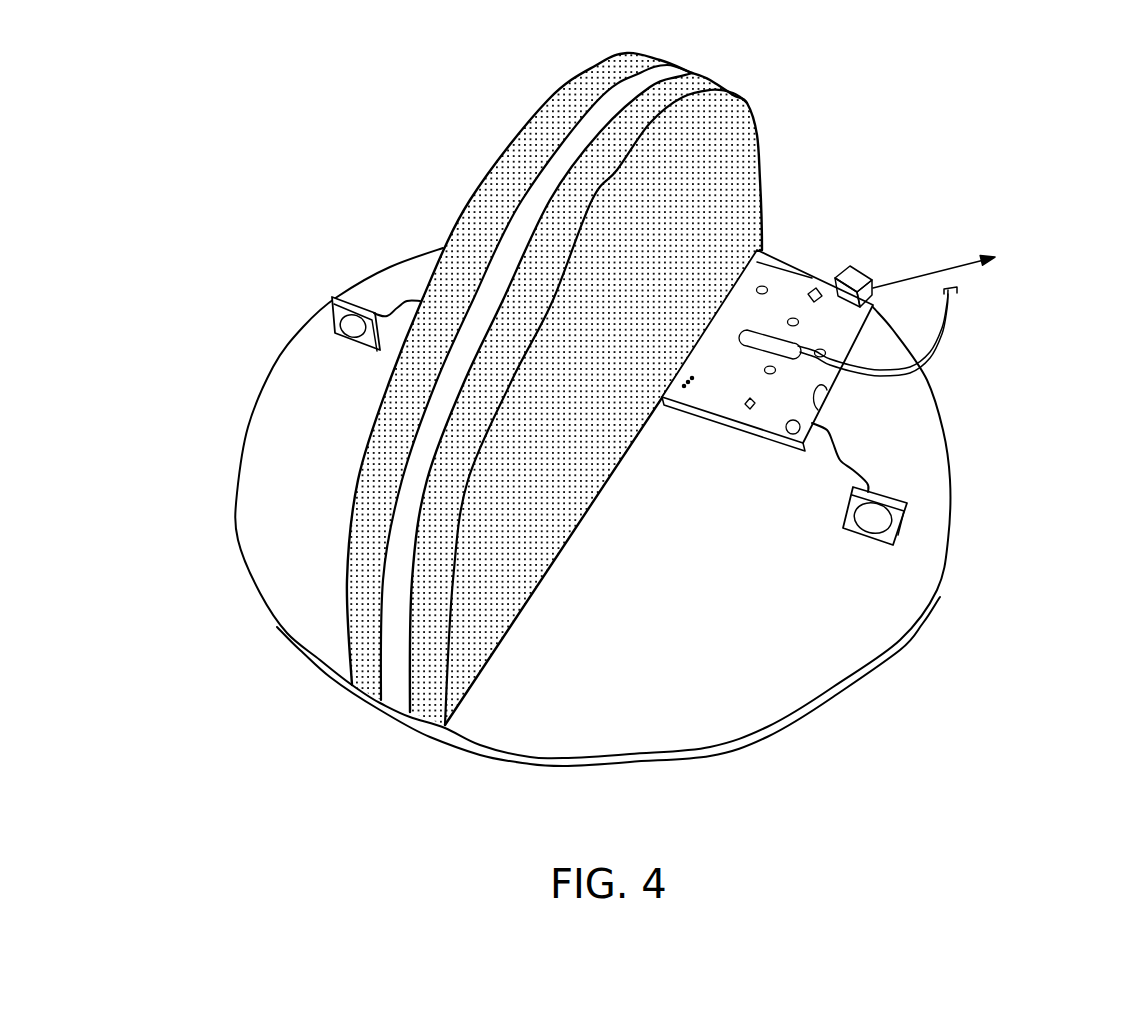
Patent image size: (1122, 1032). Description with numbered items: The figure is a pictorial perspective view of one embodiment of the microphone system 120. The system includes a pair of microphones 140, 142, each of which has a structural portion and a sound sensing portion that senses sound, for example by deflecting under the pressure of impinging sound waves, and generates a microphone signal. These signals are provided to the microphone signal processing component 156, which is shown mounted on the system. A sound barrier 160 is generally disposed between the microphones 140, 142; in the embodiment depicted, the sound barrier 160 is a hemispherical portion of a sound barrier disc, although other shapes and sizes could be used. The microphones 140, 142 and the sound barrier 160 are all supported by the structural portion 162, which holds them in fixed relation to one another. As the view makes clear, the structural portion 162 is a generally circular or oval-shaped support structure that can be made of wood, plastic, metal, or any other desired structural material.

The microphone system 120 is at (847, 171).
The microphone 140 is at (332, 300).
The microphone 142 is at (907, 530).
The microphone signal processing component 156 is at (847, 383).
The sound barrier 160 is at (503, 260).
The structural portion 162 is at (840, 602).